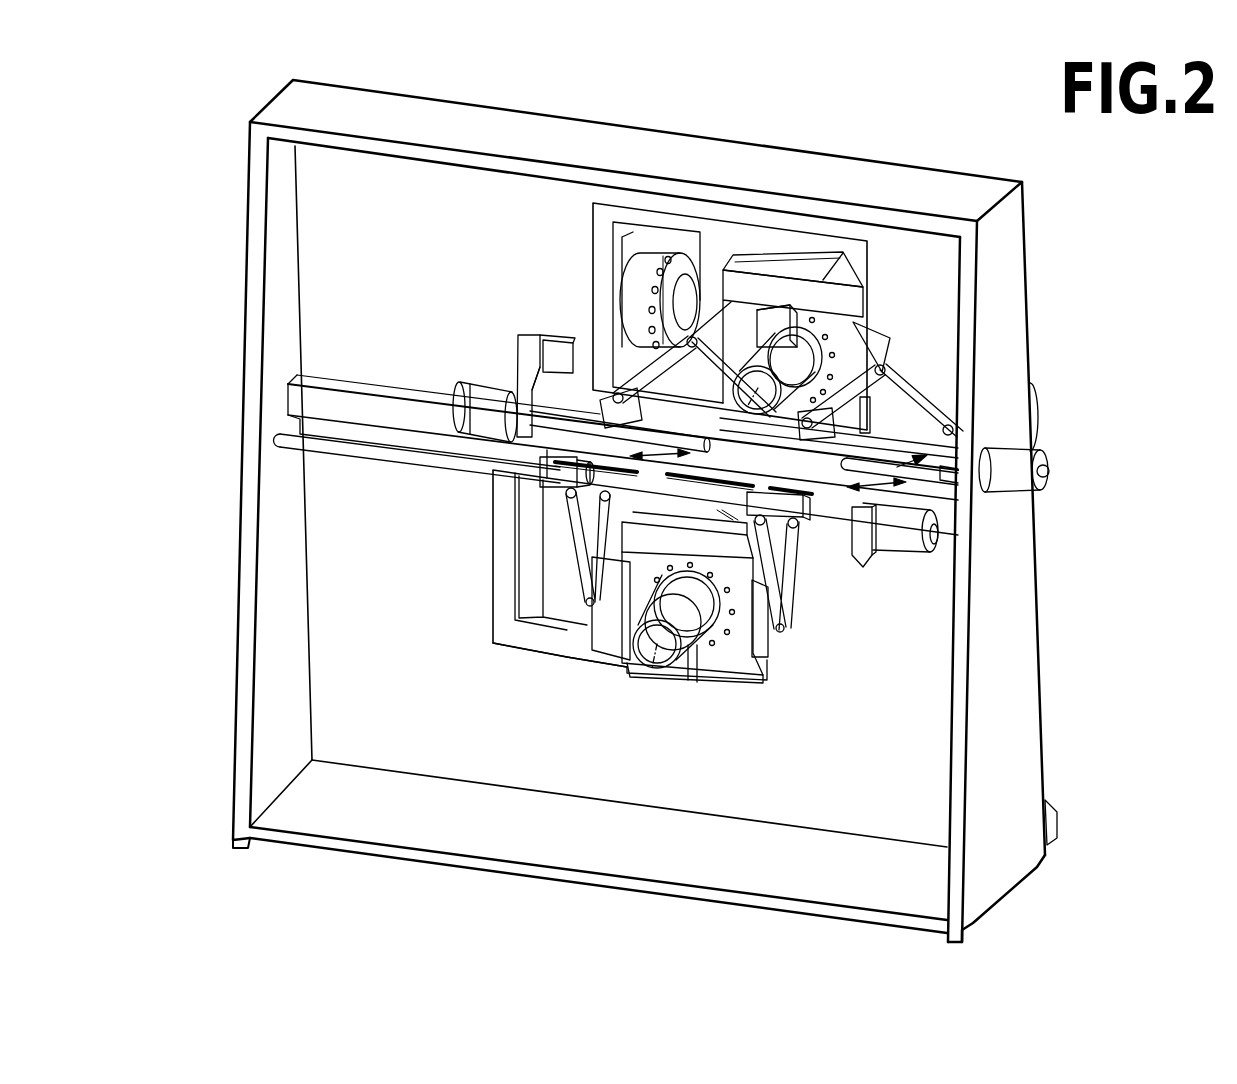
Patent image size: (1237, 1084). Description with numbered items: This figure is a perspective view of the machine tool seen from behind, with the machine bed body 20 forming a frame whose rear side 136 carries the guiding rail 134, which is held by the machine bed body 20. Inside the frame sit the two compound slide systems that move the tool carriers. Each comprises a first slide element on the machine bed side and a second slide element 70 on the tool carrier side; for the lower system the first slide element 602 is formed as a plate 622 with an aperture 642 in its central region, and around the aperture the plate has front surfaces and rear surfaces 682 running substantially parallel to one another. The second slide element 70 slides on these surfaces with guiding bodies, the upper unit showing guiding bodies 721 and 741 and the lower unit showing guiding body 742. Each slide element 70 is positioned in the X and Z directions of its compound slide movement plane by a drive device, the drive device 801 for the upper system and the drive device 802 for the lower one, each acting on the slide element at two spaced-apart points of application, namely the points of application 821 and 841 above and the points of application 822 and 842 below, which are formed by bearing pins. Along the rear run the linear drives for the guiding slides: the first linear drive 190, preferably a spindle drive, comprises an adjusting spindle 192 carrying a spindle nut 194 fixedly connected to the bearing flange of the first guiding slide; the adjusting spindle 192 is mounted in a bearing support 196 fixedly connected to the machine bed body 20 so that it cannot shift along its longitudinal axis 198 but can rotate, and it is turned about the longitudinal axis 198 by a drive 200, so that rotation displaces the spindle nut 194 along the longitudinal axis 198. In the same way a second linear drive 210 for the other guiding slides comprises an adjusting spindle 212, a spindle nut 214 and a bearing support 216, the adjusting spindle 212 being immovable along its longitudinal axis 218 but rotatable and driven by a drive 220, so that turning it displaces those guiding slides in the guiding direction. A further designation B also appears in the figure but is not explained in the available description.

The machine bed body 20 is at (332, 197).
The rear side 136 is at (327, 283).
The bearing support 216 is at (1002, 290).
The longitudinal axis 198 is at (578, 399).
The first linear drive 190 is at (557, 413).
The adjusting spindle 192 is at (523, 345).
The bearing support 196 is at (520, 382).
The drive 200 is at (463, 397).
The guiding rail 134 is at (343, 434).
The spindle nut 194 is at (560, 445).
The adjusting spindle 212 is at (913, 407).
The second linear drive 210 is at (952, 428).
The spindle nut 214 is at (958, 483).
The drive 220 is at (1050, 486).
The longitudinal axis 218 is at (905, 544).
The second slide element 70 is at (836, 308).
The guiding body 721 is at (770, 262).
The point of application 821 is at (660, 440).
The guiding body 741 is at (843, 273).
The point of application 841 is at (905, 348).
The drive device 801 is at (934, 369).
The first slide element 602 is at (494, 603).
The plate 622 is at (548, 637).
The aperture 642 is at (527, 557).
The rear surfaces 682 is at (507, 513).
The guiding body 742 is at (737, 647).
The point of application 822 is at (627, 637).
The point of application 842 is at (782, 640).
The drive device 802 is at (812, 597).
The axis B is at (747, 407).